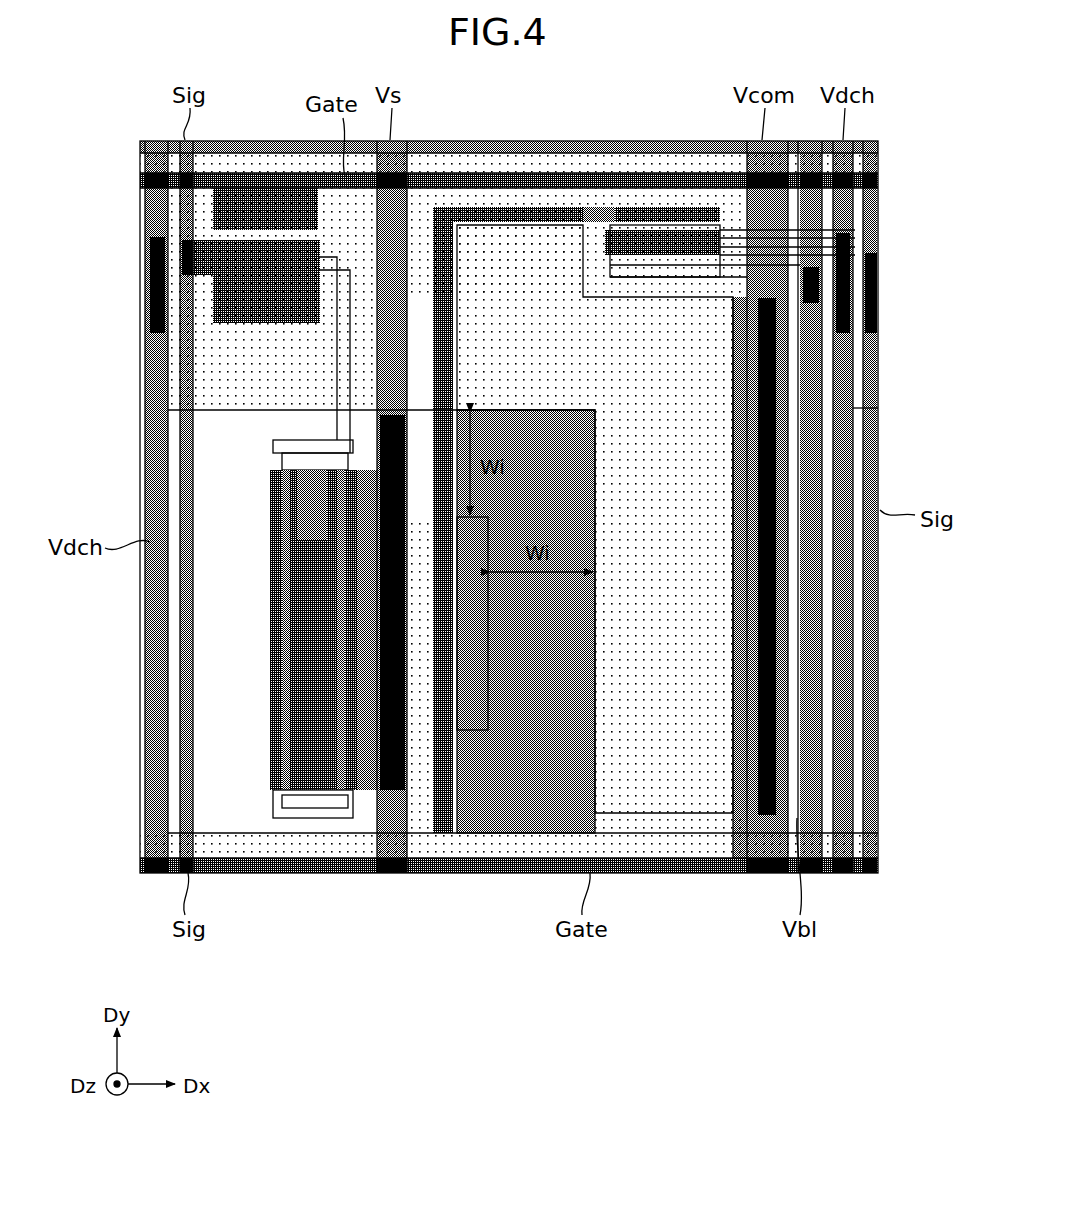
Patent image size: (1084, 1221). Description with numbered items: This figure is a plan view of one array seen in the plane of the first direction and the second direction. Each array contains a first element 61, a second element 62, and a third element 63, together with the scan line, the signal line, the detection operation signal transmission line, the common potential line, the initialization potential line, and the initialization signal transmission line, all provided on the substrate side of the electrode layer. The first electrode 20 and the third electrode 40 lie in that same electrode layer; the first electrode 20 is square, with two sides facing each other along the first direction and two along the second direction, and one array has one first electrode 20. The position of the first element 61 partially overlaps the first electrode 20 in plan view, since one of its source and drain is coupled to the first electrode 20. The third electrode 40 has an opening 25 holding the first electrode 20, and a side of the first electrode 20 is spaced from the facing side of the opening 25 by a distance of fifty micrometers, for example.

The first electrode 20 is at (440, 735).
The opening 25 is at (222, 657).
The third electrode 40 is at (213, 385).
The first element 61 is at (265, 456).
The second element 62 is at (226, 324).
The third element 63 is at (600, 238).